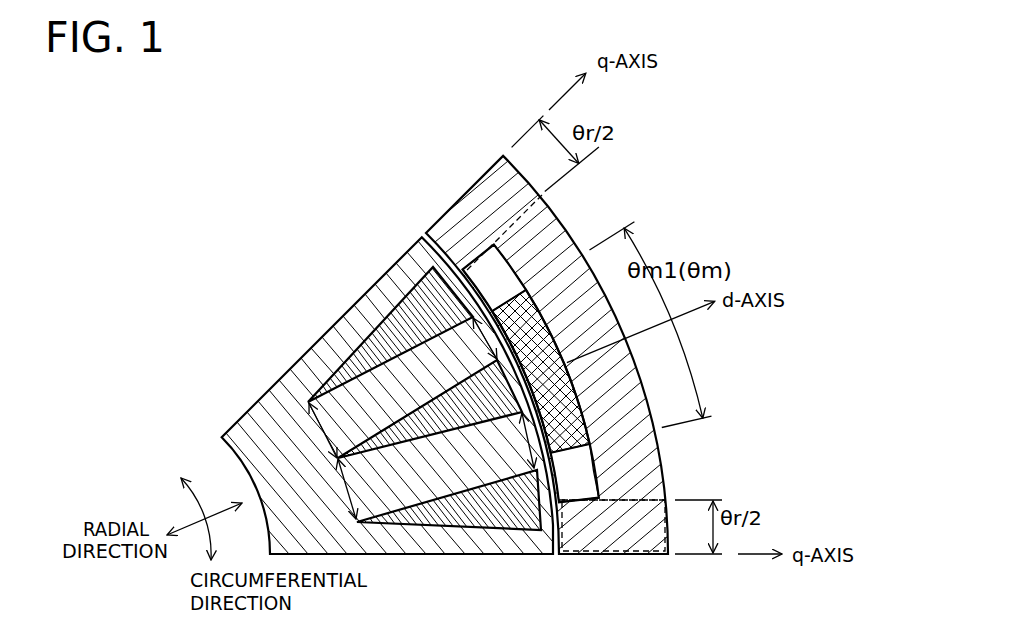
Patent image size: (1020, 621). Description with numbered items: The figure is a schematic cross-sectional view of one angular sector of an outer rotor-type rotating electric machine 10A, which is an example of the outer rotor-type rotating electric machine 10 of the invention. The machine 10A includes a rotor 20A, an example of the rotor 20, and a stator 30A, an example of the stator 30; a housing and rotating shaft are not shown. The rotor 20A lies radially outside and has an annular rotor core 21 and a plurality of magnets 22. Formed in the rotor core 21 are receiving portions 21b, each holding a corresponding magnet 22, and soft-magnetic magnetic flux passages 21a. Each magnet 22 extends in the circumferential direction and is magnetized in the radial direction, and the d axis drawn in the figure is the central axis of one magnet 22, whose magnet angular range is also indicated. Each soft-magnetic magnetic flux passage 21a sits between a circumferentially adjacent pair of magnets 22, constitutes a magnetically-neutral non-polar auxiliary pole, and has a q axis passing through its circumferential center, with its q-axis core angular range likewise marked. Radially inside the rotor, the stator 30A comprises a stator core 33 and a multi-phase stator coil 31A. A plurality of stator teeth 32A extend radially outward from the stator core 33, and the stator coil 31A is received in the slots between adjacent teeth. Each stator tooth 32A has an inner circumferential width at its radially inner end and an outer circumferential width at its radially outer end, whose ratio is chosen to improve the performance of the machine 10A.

The outer rotor-type rotating electric machine 10 is at (472, 353).
The outer rotor-type rotating electric machine 10A is at (326, 103).
The rotor 20 is at (547, 355).
The rotor 20A is at (411, 136).
The rotor core 21 is at (500, 210).
The soft-magnetic magnetic flux passage 21a is at (500, 157).
The receiving portion 21b is at (595, 482).
The magnet 22 is at (488, 244).
The stator 30 is at (387, 381).
The stator 30A is at (313, 230).
The stator coil 31A is at (412, 317).
The stator tooth 32A is at (357, 330).
The stator core 33 is at (290, 452).